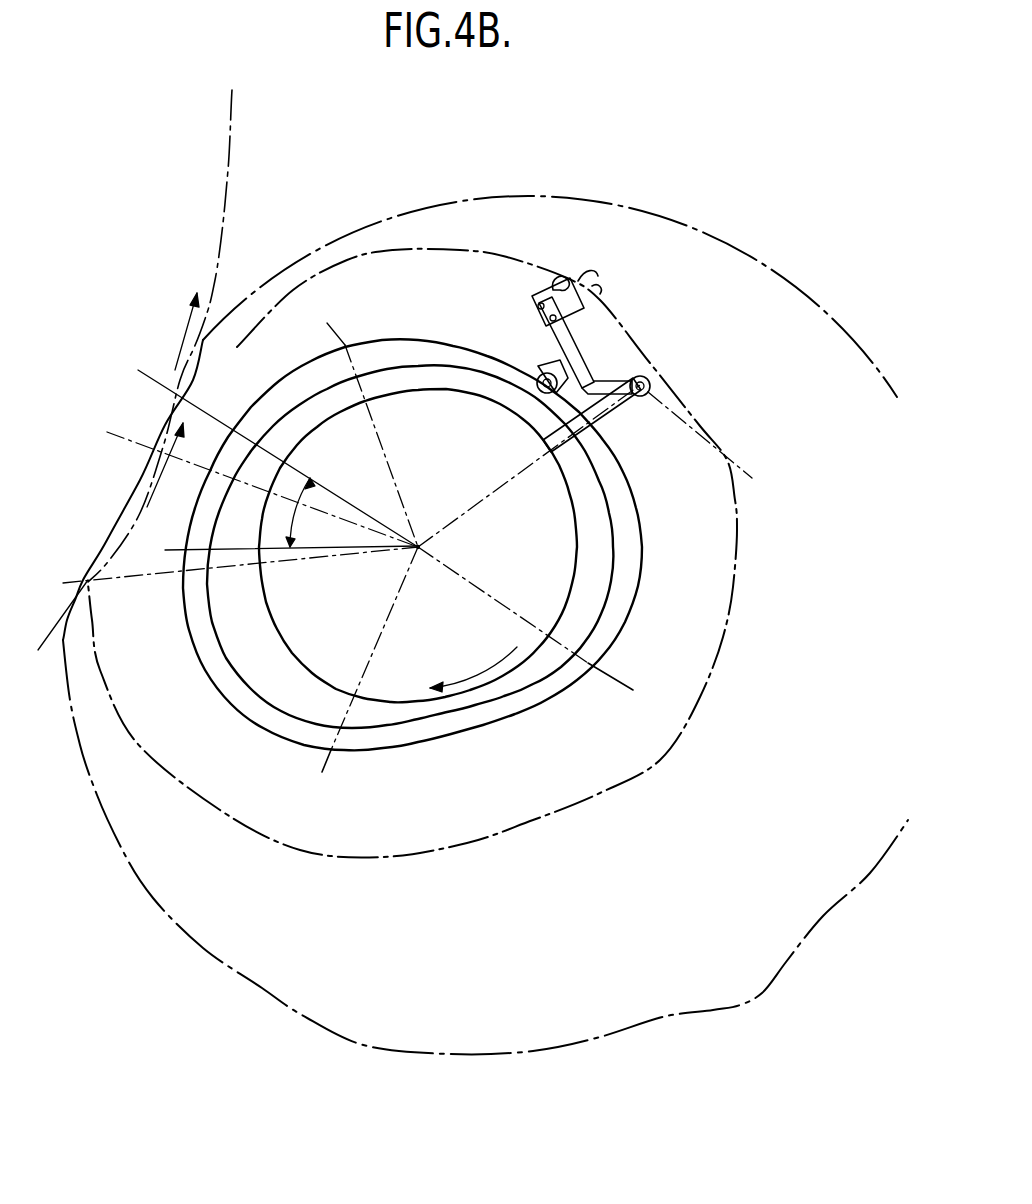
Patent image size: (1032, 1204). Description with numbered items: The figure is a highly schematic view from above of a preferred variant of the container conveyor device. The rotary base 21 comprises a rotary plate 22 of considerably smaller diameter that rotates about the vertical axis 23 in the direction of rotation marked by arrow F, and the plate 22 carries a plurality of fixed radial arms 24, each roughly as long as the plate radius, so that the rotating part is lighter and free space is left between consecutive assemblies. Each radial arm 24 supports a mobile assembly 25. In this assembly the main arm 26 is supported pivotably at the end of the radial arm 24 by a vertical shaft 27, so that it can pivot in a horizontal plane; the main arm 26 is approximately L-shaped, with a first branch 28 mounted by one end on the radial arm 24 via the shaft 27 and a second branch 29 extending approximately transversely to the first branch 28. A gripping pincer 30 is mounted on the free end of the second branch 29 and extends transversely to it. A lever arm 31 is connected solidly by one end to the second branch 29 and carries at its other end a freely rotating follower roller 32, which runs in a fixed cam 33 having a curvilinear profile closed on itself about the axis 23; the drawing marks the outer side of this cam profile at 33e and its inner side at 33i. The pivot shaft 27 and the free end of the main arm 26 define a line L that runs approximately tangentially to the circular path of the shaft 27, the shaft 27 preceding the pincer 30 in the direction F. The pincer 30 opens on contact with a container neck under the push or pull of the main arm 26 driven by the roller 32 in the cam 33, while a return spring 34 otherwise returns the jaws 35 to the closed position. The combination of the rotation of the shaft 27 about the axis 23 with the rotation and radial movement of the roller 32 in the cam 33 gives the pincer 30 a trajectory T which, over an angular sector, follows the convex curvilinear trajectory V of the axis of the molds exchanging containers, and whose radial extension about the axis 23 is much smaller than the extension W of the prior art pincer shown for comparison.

The rotary base 21 is at (660, 547).
The rotary plate 22 is at (475, 545).
The vertical axis 23 is at (292, 460).
The radial arm 24 is at (363, 547).
The mobile assembly 25 is at (657, 333).
The main arm 26 is at (529, 337).
The vertical shaft 27 is at (693, 376).
The first branch 28 is at (650, 364).
The second branch 29 is at (625, 315).
The gripping pincer 30 is at (550, 242).
The lever arm 31 is at (508, 396).
The follower roller 32 is at (520, 415).
The fixed cam 33 is at (412, 544).
The tire outer surface 33e is at (412, 544).
The tire inner surface 33i is at (410, 546).
The return spring 34 is at (533, 294).
The jaws 35 is at (622, 258).
The convex curvilinear trajectory V is at (135, 370).
The direction of movement D is at (150, 400).
The line L is at (707, 443).
The trajectory T is at (412, 561).
The radial extension of prior art pincer trajectory W is at (485, 625).
The direction of rotation F is at (473, 667).